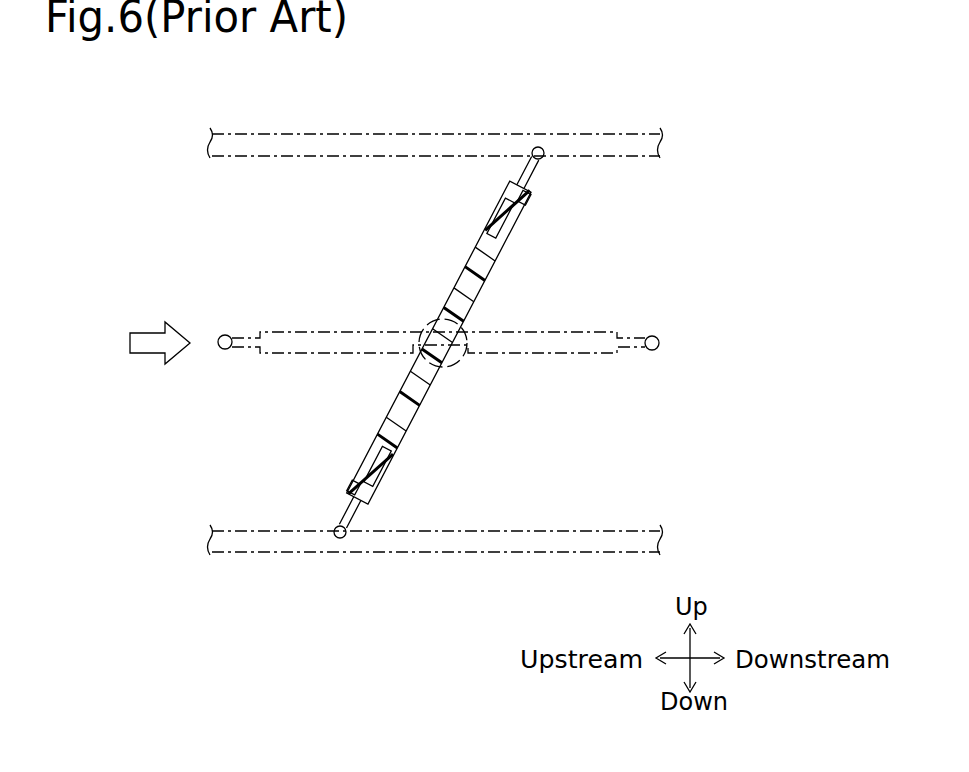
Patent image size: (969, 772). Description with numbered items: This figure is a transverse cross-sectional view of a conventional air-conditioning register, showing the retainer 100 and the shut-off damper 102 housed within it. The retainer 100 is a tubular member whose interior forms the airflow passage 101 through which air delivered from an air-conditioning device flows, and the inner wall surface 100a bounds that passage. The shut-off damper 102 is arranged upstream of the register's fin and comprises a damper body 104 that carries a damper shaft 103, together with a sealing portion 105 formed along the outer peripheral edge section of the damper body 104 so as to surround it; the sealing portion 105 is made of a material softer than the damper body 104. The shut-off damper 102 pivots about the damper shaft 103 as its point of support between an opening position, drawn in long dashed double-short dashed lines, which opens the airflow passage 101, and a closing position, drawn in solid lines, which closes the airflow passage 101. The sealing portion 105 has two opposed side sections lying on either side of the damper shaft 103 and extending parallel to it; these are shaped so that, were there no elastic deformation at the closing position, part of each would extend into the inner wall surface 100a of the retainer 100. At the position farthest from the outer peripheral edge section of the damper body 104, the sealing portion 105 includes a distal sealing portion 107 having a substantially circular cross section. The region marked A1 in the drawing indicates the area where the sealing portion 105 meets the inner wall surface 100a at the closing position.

The retainer 100 is at (327, 127).
The inner wall surface 100a is at (618, 158).
The airflow passage 101 is at (355, 254).
The shut-off damper 102 is at (457, 280).
The damper shaft 103 is at (462, 364).
The damper body 104 is at (462, 297).
The sealing portion 105 is at (349, 521).
The distal sealing portion 107 is at (538, 147).
The conveying direction A1 is at (145, 357).